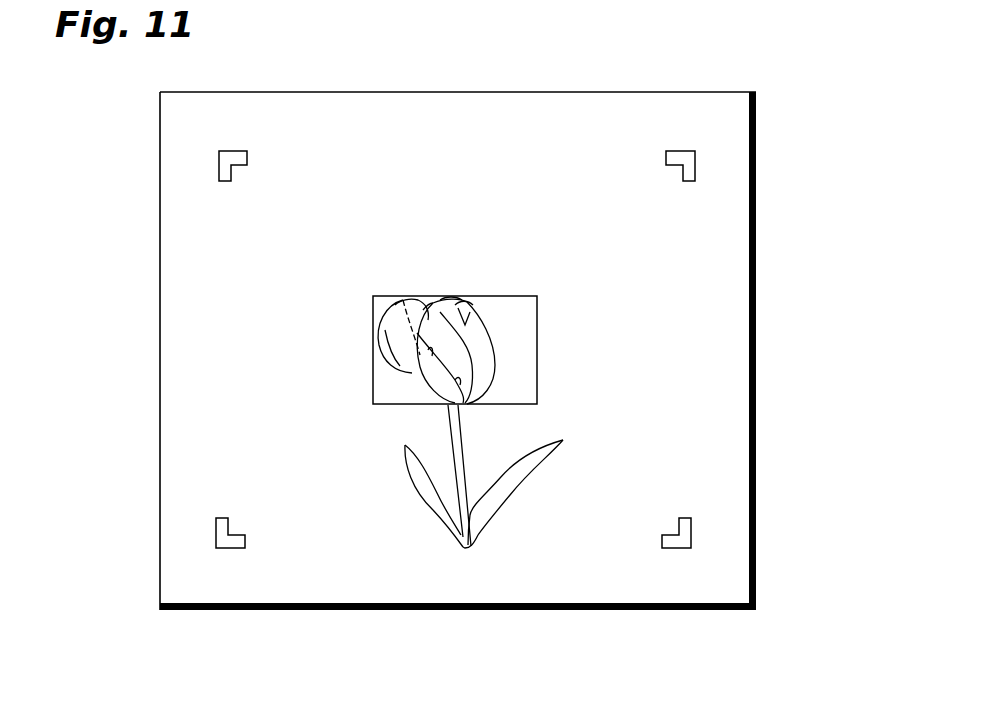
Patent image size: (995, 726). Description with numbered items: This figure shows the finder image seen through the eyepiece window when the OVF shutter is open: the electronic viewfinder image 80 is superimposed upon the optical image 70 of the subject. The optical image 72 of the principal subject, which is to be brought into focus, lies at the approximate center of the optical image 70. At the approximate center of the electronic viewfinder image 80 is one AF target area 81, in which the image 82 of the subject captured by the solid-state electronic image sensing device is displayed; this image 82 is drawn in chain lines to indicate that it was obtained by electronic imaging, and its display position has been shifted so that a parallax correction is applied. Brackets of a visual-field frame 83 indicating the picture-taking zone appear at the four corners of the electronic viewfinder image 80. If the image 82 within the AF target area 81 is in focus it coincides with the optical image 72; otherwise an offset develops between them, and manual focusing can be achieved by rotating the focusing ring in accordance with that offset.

The optical image of the subject 70 is at (732, 338).
The electronic viewfinder image 80 is at (747, 243).
The image of a principal subject 72 is at (510, 291).
The AF target area 81 is at (537, 375).
The image of the subject 82 is at (452, 290).
The visual-field frame 83 is at (235, 151).